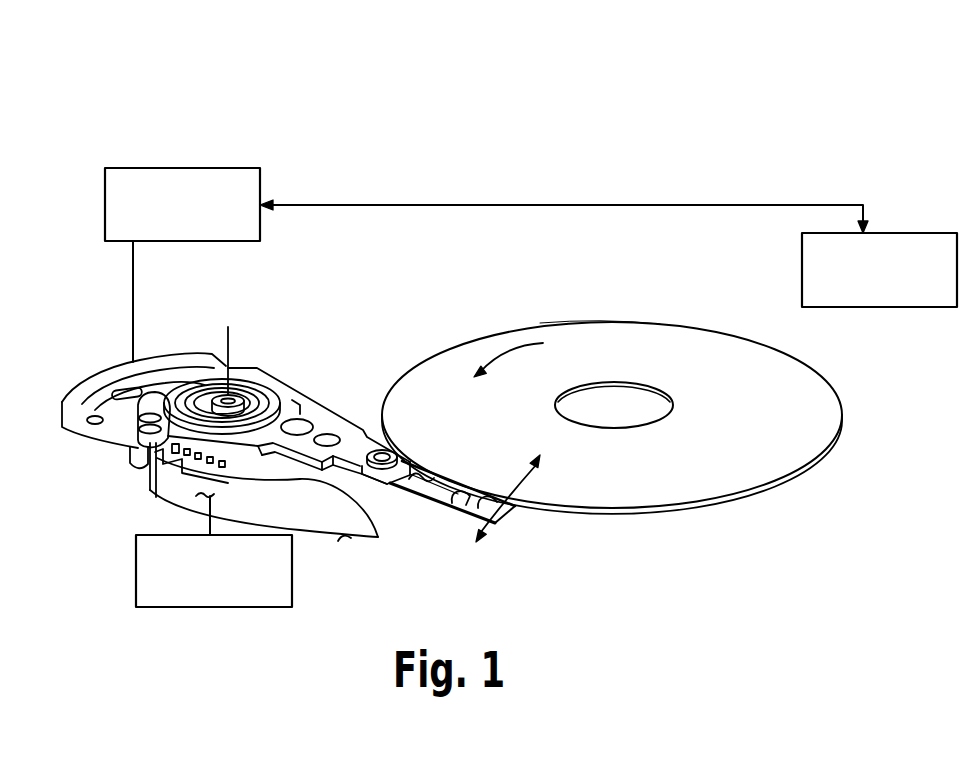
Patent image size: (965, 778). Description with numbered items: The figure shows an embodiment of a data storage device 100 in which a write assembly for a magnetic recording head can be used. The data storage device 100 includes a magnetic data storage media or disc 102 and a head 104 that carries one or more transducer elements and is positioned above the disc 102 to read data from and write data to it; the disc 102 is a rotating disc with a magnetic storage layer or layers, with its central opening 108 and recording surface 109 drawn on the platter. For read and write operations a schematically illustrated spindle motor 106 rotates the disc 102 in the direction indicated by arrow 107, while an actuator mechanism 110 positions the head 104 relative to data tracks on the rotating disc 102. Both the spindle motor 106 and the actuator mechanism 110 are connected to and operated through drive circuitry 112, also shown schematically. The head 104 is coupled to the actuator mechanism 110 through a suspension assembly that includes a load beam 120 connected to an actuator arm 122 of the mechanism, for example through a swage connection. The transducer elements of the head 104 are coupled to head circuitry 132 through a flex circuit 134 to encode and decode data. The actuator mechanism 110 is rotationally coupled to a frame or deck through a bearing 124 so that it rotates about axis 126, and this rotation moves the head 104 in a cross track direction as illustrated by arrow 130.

The data storage device 100 is at (757, 162).
The magnetic data storage media or disc 102 is at (716, 350).
The head 104 is at (517, 514).
The spindle motor 106 is at (919, 233).
The arrow 107 is at (503, 357).
The central aperture / hub 108 is at (638, 382).
The disc surface / track 109 is at (578, 322).
The actuator mechanism 110 is at (252, 350).
The drive circuitry 112 is at (232, 167).
The load beam 120 is at (424, 471).
The actuator arm 122 is at (331, 398).
The bearing 124 is at (222, 392).
The axis 126 is at (226, 344).
The arrow 130 is at (532, 487).
The head circuitry 132 is at (136, 570).
The flex circuit 134 is at (215, 475).